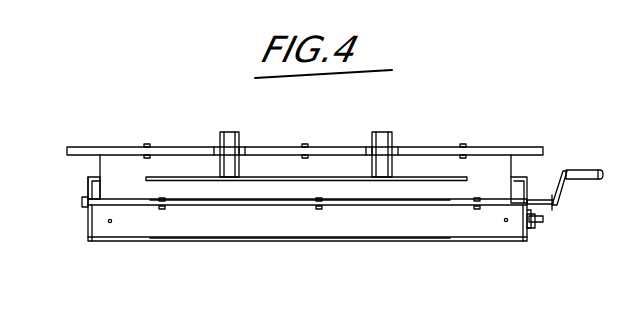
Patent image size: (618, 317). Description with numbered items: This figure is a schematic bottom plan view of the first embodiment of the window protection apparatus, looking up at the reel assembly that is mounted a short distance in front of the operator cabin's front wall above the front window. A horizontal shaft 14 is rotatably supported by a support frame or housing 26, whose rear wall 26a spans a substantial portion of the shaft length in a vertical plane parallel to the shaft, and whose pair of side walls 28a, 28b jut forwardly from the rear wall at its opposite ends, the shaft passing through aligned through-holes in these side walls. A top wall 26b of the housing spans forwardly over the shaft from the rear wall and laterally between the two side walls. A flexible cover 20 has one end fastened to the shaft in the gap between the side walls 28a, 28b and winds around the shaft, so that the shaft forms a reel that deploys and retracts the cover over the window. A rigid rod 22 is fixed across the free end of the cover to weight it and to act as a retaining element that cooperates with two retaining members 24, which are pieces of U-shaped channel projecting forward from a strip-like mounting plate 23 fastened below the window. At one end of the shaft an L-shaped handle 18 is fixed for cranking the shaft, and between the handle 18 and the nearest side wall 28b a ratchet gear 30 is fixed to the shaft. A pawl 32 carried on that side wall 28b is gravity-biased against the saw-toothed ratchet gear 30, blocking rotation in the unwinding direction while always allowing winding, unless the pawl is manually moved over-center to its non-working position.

The horizontal shaft 14 is at (97, 190).
The L-shaped handle 18 is at (598, 150).
The cover 20 is at (118, 165).
The rod 22 is at (227, 152).
The mounting plate 23 is at (424, 178).
The retaining members 24 is at (246, 140).
The support frame or housing 26 is at (98, 243).
The rear wall 26a is at (293, 240).
The top wall 26b is at (414, 226).
The side wall 28a is at (88, 229).
The side wall 28b is at (531, 228).
The ratchet gear 30 is at (527, 204).
The pawl 32 is at (543, 219).